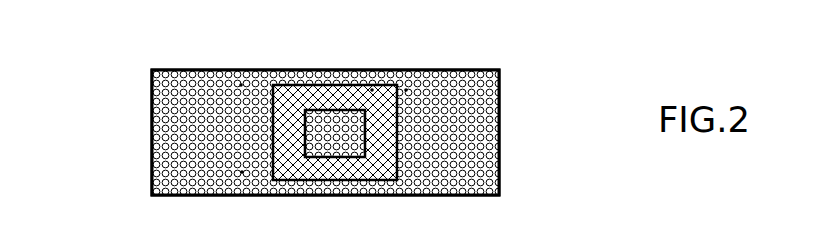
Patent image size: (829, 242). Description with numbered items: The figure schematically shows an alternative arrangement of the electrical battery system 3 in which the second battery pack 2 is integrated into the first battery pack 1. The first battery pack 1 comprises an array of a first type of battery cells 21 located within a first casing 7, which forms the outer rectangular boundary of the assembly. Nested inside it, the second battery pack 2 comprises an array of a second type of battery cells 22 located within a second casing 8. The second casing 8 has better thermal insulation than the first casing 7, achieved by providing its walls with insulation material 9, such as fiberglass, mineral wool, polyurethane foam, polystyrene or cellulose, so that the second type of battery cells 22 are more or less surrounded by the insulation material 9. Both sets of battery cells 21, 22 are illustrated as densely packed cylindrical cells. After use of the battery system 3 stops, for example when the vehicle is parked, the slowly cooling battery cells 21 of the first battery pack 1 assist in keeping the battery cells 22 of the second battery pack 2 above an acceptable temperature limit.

The first battery pack 1 is at (242, 175).
The second battery pack 2 is at (327, 152).
The electrical battery system 3 is at (106, 93).
The first casing 7 is at (190, 70).
The second casing 8 is at (372, 90).
The insulation material 9 is at (406, 90).
The battery cells 21 is at (241, 85).
The battery cells 22 is at (305, 98).